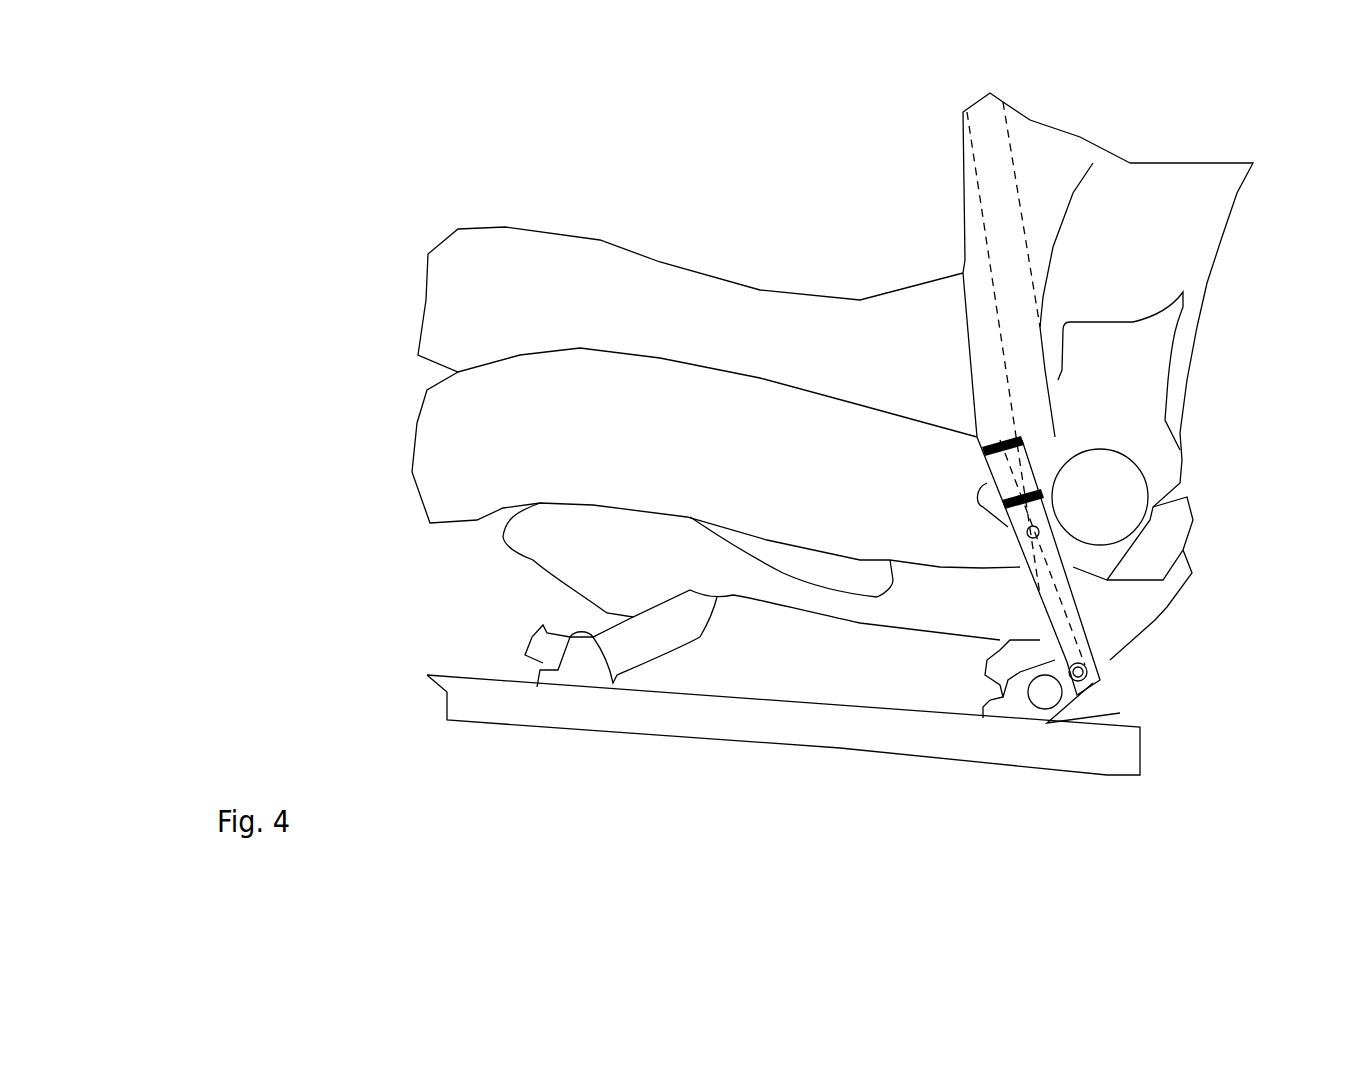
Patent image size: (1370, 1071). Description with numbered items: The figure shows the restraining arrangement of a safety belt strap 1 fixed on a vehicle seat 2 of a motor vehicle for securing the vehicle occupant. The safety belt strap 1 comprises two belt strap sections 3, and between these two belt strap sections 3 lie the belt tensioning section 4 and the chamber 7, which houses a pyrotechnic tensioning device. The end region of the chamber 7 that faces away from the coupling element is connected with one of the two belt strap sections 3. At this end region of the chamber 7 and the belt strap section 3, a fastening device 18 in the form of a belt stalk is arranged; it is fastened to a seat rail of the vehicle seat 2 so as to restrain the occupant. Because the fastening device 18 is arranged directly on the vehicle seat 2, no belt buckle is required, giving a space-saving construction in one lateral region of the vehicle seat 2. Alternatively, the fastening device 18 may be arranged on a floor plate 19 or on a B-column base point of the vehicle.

The safety belt strap 1 is at (1037, 207).
The vehicle seat 2 is at (1113, 272).
The belt strap sections 3 is at (930, 348).
The belt tensioning section 4 is at (1048, 463).
The chamber 7 is at (1040, 535).
The fastening device 18 is at (1073, 618).
The floor plate 19 is at (1100, 715).